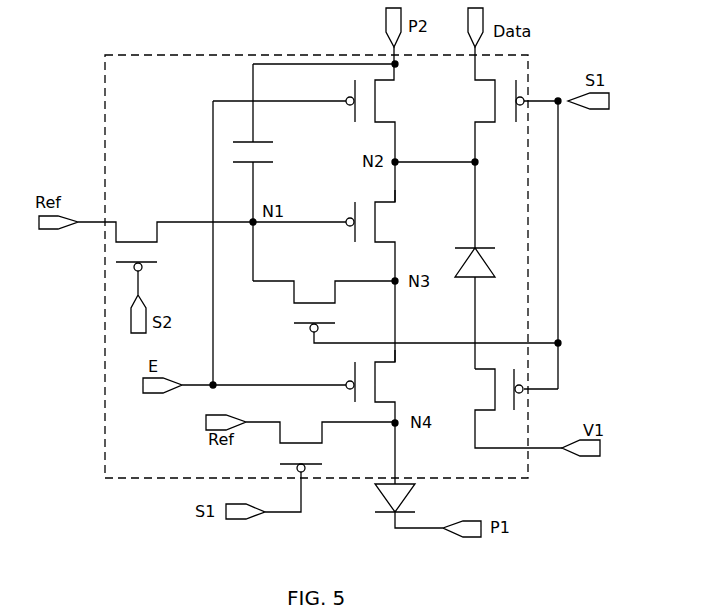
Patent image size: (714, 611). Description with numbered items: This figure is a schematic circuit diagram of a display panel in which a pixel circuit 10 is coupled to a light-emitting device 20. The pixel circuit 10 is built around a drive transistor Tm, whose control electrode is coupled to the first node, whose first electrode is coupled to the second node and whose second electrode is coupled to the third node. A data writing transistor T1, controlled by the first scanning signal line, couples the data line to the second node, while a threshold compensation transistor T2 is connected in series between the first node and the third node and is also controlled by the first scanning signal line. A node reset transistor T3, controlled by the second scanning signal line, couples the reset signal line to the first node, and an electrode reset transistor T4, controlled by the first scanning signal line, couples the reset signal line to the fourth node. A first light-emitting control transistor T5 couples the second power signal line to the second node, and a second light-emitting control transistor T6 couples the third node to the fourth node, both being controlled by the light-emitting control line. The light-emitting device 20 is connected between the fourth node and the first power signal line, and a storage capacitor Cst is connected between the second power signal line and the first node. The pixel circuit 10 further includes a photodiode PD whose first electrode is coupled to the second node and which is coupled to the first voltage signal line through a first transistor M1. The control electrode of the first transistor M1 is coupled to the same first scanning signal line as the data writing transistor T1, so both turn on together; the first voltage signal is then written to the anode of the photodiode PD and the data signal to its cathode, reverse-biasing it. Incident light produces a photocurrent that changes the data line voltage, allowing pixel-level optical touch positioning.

The pixel circuit 10 is at (105, 330).
The light-emitting device 20 is at (407, 498).
The data writing transistor T1 is at (498, 94).
The threshold compensation transistor T2 is at (324, 306).
The node reset transistor T3 is at (140, 246).
The electrode reset transistor T4 is at (307, 447).
The first light-emitting control transistor T5 is at (364, 94).
The second light-emitting control transistor T6 is at (364, 382).
The drive transistor Tm is at (375, 225).
The first transistor M1 is at (501, 397).
The storage capacitor Cst is at (270, 152).
The photodiode PD is at (487, 262).